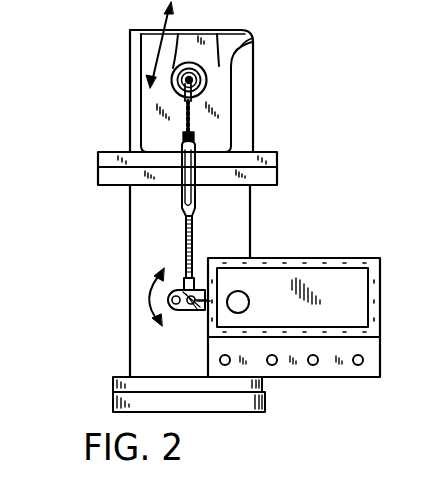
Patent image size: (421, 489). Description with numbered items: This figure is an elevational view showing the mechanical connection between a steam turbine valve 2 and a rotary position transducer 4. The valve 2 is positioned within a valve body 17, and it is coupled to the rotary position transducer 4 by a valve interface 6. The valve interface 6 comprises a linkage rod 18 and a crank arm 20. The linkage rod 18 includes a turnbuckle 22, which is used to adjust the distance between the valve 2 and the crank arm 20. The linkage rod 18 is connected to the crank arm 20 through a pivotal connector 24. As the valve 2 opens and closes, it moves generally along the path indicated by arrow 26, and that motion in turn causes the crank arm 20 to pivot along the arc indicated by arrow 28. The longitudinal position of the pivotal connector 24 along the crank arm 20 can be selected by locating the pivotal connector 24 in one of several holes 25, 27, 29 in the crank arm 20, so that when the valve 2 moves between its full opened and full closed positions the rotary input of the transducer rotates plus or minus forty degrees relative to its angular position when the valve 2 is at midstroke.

The valve 2 is at (204, 44).
The rotary position transducer 4 is at (242, 300).
The valve interface 6 is at (177, 212).
The valve body 17 is at (255, 32).
The linkage rod 18 is at (185, 242).
The crank arm 20 is at (175, 312).
The turnbuckle 22 is at (193, 139).
The pivotal connector 24 is at (185, 312).
The hole 25 is at (173, 288).
The arrow 26 is at (157, 54).
The hole 27 is at (188, 297).
The arrow 28 is at (148, 297).
The hole 29 is at (197, 301).